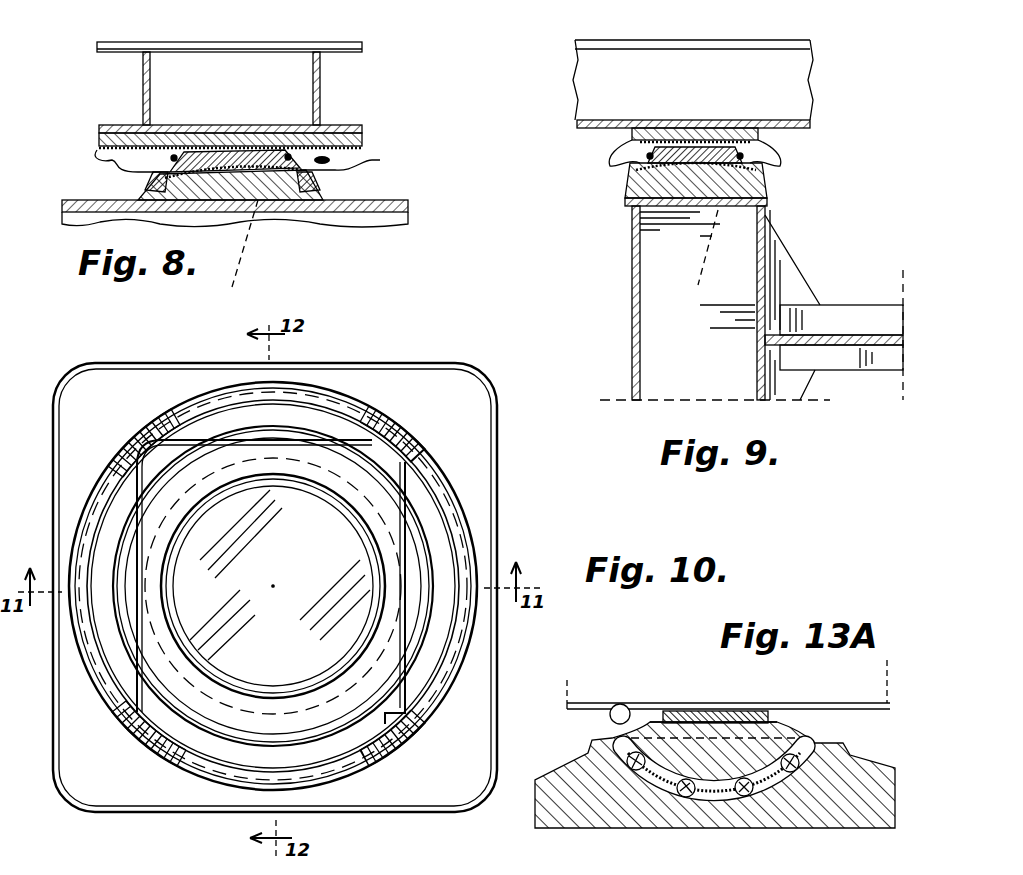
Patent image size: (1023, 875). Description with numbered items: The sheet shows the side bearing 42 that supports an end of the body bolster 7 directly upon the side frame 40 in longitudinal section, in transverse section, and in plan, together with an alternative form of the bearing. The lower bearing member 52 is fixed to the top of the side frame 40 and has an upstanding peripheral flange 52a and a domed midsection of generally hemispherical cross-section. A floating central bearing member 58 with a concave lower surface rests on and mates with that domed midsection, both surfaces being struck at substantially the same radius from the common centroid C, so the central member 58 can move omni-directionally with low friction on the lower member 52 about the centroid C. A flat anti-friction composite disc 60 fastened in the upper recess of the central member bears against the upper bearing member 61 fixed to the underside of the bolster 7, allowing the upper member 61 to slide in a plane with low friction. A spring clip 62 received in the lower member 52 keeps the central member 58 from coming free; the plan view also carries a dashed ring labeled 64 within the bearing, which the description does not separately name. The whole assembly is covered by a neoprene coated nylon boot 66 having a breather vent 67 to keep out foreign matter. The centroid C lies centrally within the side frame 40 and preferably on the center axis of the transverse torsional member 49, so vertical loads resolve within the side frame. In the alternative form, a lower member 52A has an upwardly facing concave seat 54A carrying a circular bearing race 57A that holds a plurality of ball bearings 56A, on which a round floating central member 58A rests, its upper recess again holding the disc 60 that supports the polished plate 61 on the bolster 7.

In FIG. 8, the body bolster 7 is at (327, 42).
In FIG. 9, the body bolster 7 is at (795, 100).
In FIG. 13A, the body bolster 7 is at (572, 683).
In FIG. 8, the side frame 40 is at (400, 200).
In FIG. 9, the side frame 40 is at (768, 200).
In FIG. 13A, the side frame 40 is at (916, 768).
In FIG. 8, the side bearing 42 is at (77, 181).
In FIG. 9, the side bearing 42 is at (594, 203).
In FIG. 9, the transverse torsional member 49 is at (865, 335).
In FIG. 10, the lower bearing member 52 is at (473, 420).
In FIG. 10, the upstanding peripheral flange 52a is at (463, 518).
In FIG. 13A, the lower member 52A is at (622, 815).
In FIG. 13A, the concave seat 54A is at (648, 775).
In FIG. 13A, the ball bearings 56A is at (700, 795).
In FIG. 13A, the circular bearing race 57A is at (785, 775).
In FIG. 10, the floating central bearing member 58 is at (330, 716).
In FIG. 13A, the floating central member 58A is at (660, 735).
In FIG. 10, the anti-friction composite disc 60 is at (290, 565).
In FIG. 13A, the anti-friction composite disc 60 is at (727, 712).
In FIG. 13A, the upper bearing member 61 is at (613, 706).
In FIG. 10, the spring clip 62 is at (193, 440).
In FIG. 10, the intermediate ring 64 is at (412, 692).
In FIG. 8, the boot 66 is at (372, 162).
In FIG. 9, the boot 66 is at (612, 165).
In FIG. 8, the breather vent 67 is at (330, 126).
In FIG. 8, the common centroid C is at (232, 287).
In FIG. 9, the common centroid C is at (698, 285).